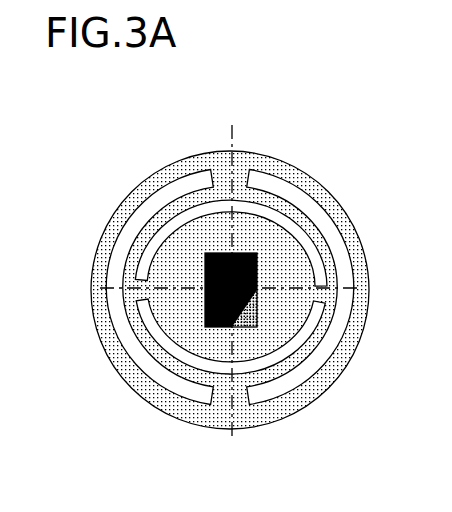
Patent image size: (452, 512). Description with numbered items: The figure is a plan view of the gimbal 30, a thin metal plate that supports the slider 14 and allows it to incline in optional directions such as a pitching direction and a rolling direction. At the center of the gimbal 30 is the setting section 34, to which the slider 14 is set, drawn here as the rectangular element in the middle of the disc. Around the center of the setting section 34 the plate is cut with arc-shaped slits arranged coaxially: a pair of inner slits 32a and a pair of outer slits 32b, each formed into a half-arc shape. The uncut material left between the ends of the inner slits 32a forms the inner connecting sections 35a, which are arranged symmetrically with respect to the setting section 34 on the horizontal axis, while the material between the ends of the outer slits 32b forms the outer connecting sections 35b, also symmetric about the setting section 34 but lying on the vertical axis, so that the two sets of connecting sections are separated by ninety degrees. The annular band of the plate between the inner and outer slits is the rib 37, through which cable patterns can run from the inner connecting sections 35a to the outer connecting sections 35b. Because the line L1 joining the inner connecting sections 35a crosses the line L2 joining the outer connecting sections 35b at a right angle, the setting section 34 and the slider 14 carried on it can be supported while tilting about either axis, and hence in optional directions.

The gimbal 30 is at (273, 125).
The slider 14 is at (253, 258).
The setting section 34 is at (165, 280).
The inner slit 32a is at (180, 358).
The outer slit 32b is at (122, 328).
The inner connecting section 35a is at (105, 289).
The outer connecting section 35b is at (230, 165).
The rib 37 is at (298, 372).
The line connecting the inner connecting sections L1 is at (325, 300).
The line connecting the outer connecting sections L2 is at (233, 405).